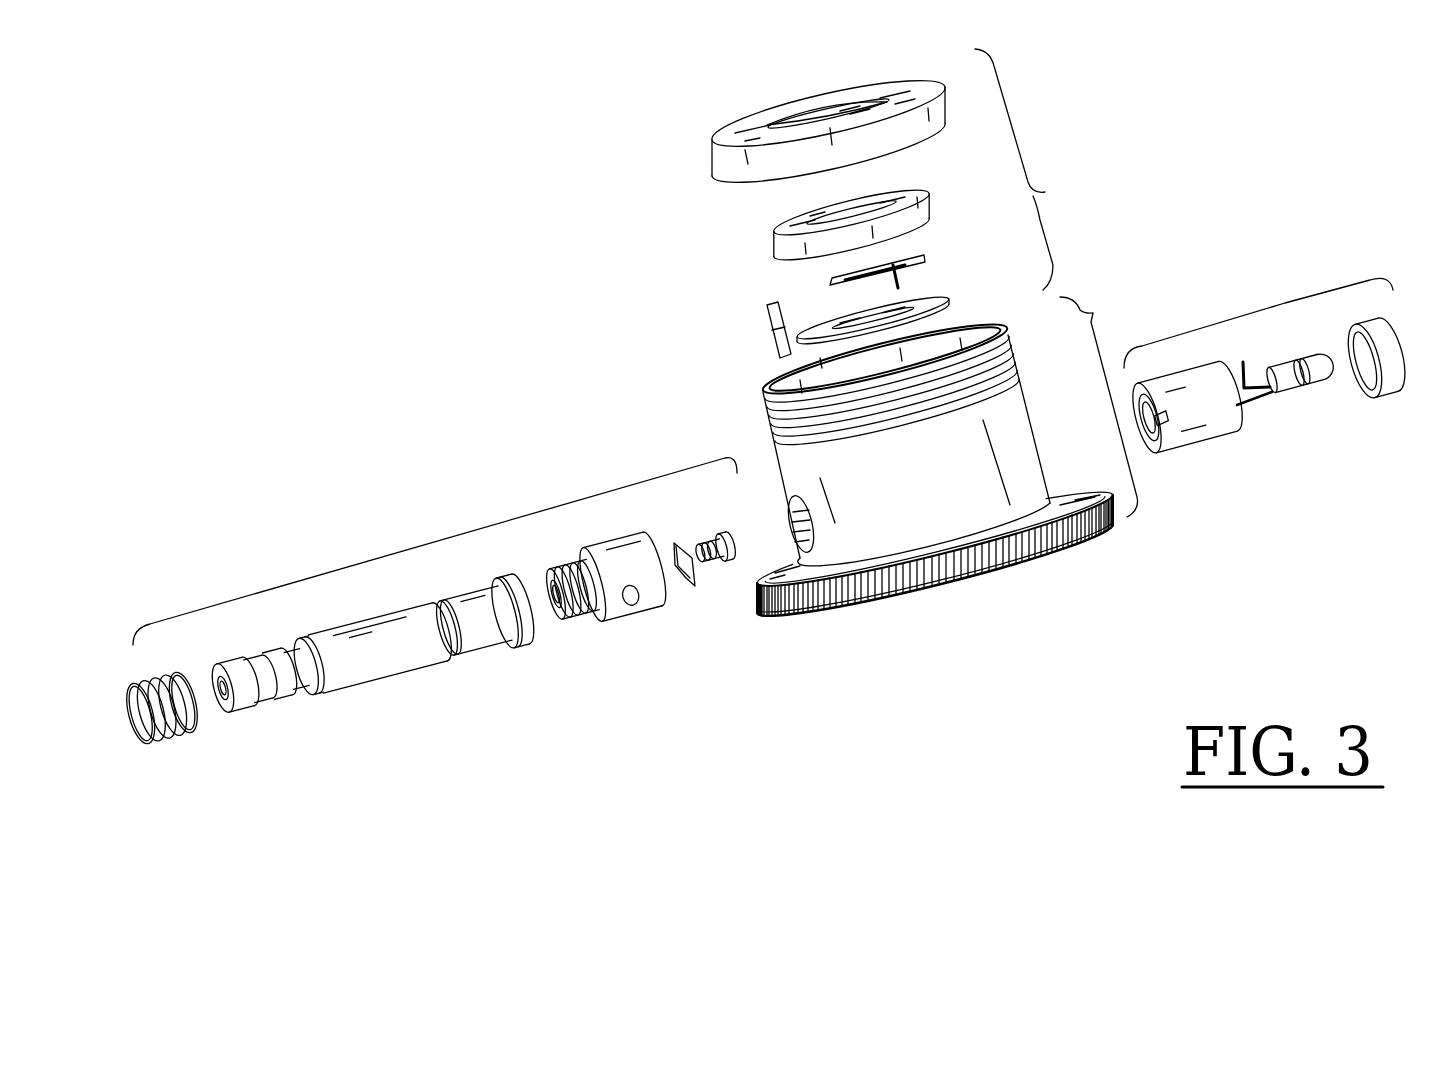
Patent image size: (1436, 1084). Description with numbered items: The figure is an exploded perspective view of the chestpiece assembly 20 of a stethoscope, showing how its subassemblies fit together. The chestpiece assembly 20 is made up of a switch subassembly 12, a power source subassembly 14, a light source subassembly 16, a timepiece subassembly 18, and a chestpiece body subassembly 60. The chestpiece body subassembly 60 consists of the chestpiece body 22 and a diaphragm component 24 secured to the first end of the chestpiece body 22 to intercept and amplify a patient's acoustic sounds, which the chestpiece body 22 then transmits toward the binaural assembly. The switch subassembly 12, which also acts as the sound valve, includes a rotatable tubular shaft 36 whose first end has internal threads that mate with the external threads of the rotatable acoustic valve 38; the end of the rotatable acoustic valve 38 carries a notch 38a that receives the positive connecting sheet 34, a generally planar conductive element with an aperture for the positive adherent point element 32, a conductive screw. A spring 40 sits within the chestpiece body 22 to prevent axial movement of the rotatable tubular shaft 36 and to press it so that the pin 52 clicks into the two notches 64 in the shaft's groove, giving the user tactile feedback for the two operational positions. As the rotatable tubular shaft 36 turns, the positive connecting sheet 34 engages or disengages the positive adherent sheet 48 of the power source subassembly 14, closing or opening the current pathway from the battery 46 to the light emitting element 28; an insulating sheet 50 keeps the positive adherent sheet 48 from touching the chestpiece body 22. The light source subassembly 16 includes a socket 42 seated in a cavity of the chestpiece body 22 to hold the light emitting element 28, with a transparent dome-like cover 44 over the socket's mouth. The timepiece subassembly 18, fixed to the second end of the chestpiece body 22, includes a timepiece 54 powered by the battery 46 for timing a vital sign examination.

The switch subassembly 12 is at (435, 541).
The power source subassembly 14 is at (1045, 192).
The light source subassembly 16 is at (1287, 303).
The timepiece subassembly 18 is at (745, 160).
The chestpiece assembly 20 is at (467, 323).
The chestpiece body 22 is at (998, 505).
The diaphragm component 24 is at (1000, 560).
The light emitting element 28 is at (1285, 395).
The positive adherent point element 32 is at (733, 565).
The positive connecting sheet 34 is at (690, 590).
The rotatable tubular shaft 36 is at (403, 680).
The rotatable acoustic valve 38 is at (615, 622).
The notch 38a is at (655, 605).
The spring 40 is at (178, 740).
The socket 42 is at (1185, 440).
The transparent dome-like cover 44 is at (1363, 400).
The battery 46 is at (773, 250).
The positive adherent sheet 48 is at (835, 287).
The insulating sheet 50 is at (968, 328).
The pin 52 is at (770, 338).
The timepiece 54 is at (817, 110).
The chestpiece body subassembly 60 is at (1093, 313).
The notches 64 is at (452, 655).